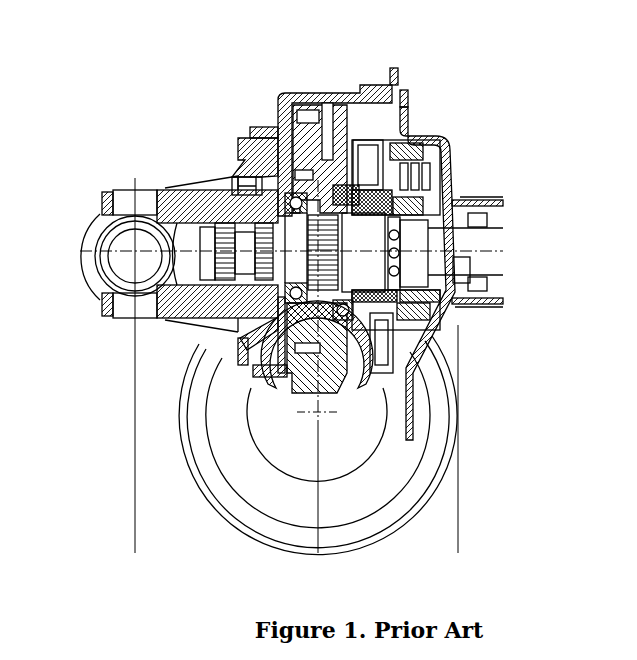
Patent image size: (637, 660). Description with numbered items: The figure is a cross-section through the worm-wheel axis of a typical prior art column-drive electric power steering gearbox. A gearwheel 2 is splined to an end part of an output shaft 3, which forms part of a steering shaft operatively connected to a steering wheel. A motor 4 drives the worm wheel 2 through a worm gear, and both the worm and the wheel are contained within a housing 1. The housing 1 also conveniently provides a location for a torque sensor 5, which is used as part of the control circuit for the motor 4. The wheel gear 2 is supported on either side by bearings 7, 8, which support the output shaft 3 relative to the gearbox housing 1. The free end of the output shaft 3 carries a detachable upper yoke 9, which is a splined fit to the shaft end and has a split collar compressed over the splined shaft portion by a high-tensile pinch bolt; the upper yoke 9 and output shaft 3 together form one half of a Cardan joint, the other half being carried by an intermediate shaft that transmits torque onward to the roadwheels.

The housing 1 is at (282, 100).
The gearwheel 2 is at (328, 147).
The output shaft 3 is at (318, 252).
The motor 4 is at (440, 450).
The torque sensor 5 is at (417, 163).
The bearing 7 is at (258, 190).
The bearing 8 is at (350, 190).
The upper yoke 9 is at (100, 218).